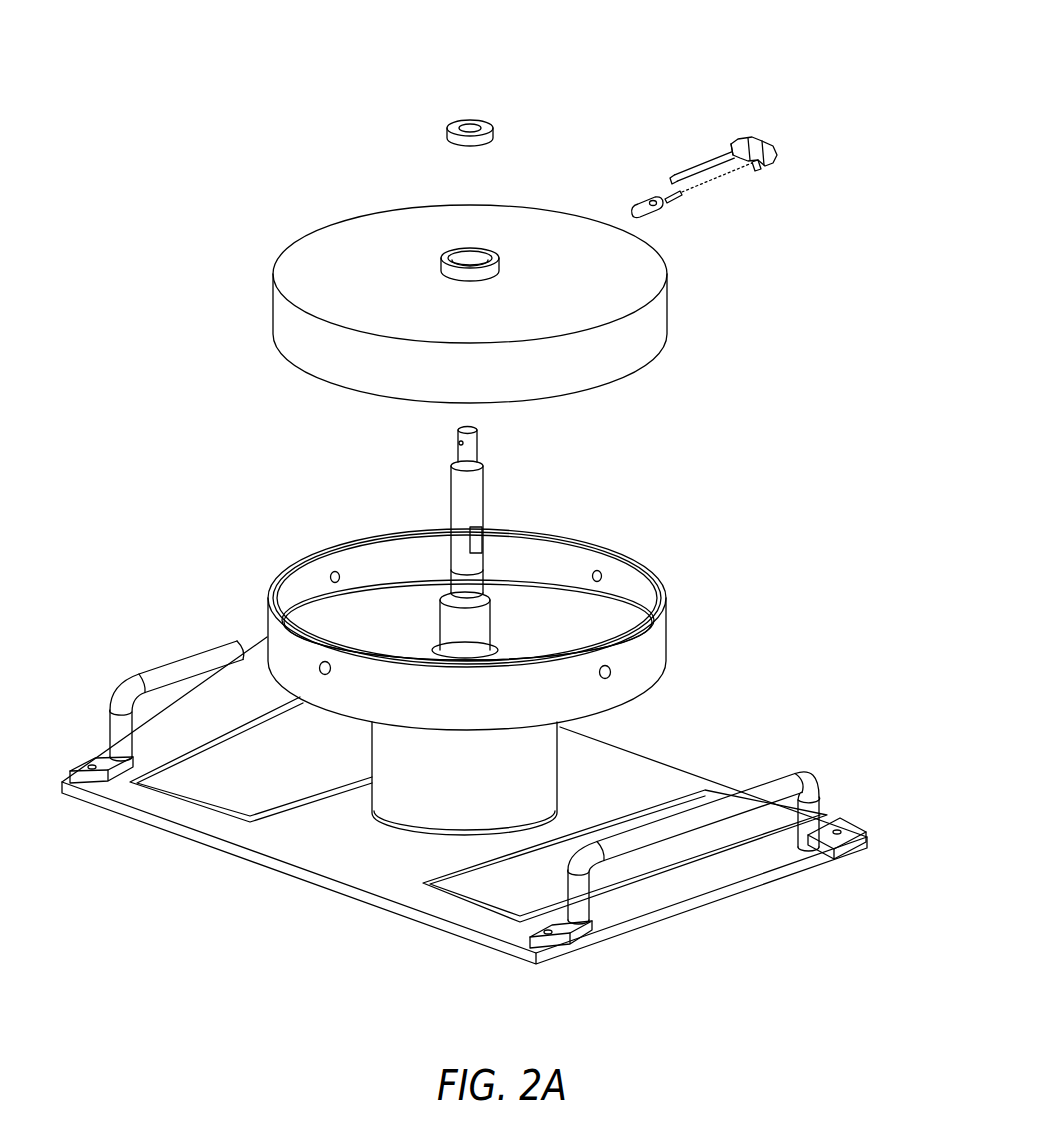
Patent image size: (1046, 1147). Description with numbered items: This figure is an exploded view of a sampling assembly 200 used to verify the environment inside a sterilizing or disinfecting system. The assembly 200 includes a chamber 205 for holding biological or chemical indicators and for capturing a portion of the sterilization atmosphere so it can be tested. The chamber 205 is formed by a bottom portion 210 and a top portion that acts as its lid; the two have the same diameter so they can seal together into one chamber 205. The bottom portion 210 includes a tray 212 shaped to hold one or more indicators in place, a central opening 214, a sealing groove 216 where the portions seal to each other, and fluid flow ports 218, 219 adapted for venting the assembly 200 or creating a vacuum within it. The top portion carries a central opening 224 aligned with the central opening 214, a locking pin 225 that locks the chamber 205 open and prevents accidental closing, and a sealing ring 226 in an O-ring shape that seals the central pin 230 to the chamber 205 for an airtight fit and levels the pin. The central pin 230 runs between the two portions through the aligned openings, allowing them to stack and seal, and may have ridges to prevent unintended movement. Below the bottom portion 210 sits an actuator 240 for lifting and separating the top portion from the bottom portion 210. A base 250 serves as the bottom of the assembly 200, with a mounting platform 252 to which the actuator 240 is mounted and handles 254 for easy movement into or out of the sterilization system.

The sampling assembly 200 is at (845, 38).
The chamber 205 is at (550, 498).
The bottom portion 210 is at (666, 632).
The tray 212 is at (560, 627).
The central opening 214 is at (483, 594).
The sealing groove 216 is at (268, 591).
The fluid flow port 218 is at (611, 671).
The fluid flow port 219 is at (270, 683).
The central opening 224 is at (478, 250).
The locking pin 225 is at (763, 152).
The sealing ring 226 is at (462, 121).
The central pin 230 is at (484, 488).
The actuator 240 is at (372, 803).
The base 250 is at (868, 829).
The platform 252 is at (478, 941).
The handles 254 is at (640, 843).